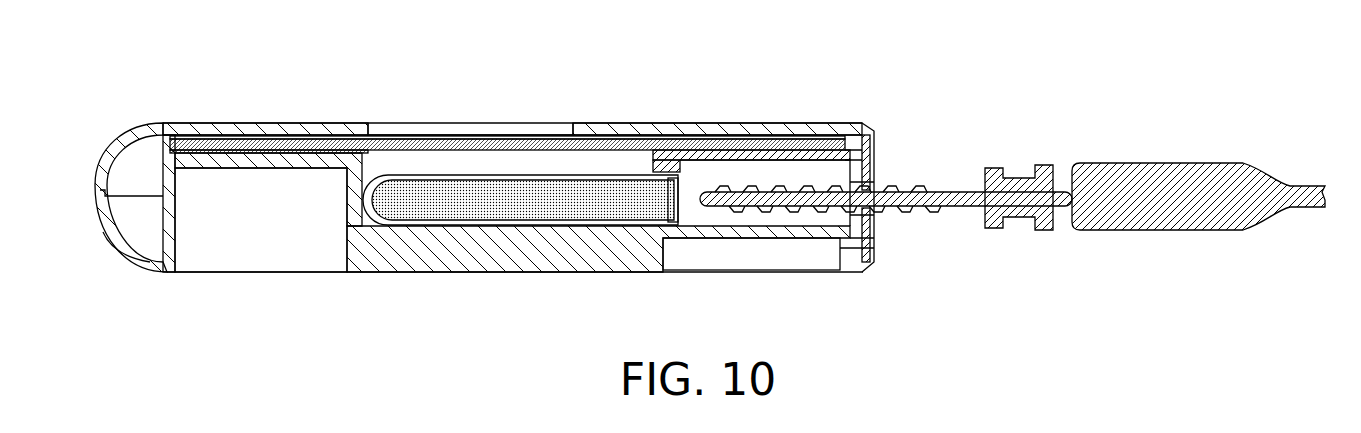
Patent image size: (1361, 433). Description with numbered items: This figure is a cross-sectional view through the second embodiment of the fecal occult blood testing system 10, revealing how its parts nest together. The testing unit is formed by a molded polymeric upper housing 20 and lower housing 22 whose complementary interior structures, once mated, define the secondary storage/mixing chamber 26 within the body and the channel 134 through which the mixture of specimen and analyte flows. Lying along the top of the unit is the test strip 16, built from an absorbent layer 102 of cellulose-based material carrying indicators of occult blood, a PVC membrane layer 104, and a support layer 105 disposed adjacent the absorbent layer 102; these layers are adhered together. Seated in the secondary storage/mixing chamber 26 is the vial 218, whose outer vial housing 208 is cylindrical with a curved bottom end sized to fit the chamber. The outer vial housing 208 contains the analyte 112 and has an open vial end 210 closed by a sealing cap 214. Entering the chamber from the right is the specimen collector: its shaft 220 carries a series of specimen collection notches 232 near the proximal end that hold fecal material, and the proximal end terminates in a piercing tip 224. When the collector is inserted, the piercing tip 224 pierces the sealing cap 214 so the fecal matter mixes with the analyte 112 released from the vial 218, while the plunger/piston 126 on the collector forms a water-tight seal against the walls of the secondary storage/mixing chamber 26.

The testing system 10 is at (195, 88).
The upper housing 20 is at (282, 123).
The lower housing 22 is at (118, 262).
The membrane layer 104 is at (272, 155).
The support layer 105 is at (391, 137).
The absorbent layer 102 is at (460, 139).
The channel 134 is at (688, 160).
The secondary storage/mixing chamber 26 is at (741, 180).
The test strip 16 is at (783, 140).
The outer vial housing 208 is at (407, 226).
The vial 218 is at (470, 226).
The open vial end 210 is at (660, 200).
The analyte 112 is at (553, 205).
The sealing cap 214 is at (690, 205).
The piercing tip 224 is at (747, 210).
The specimen collection notches 232 is at (908, 208).
The plunger/piston 126 is at (996, 165).
The shaft 220 is at (1307, 173).